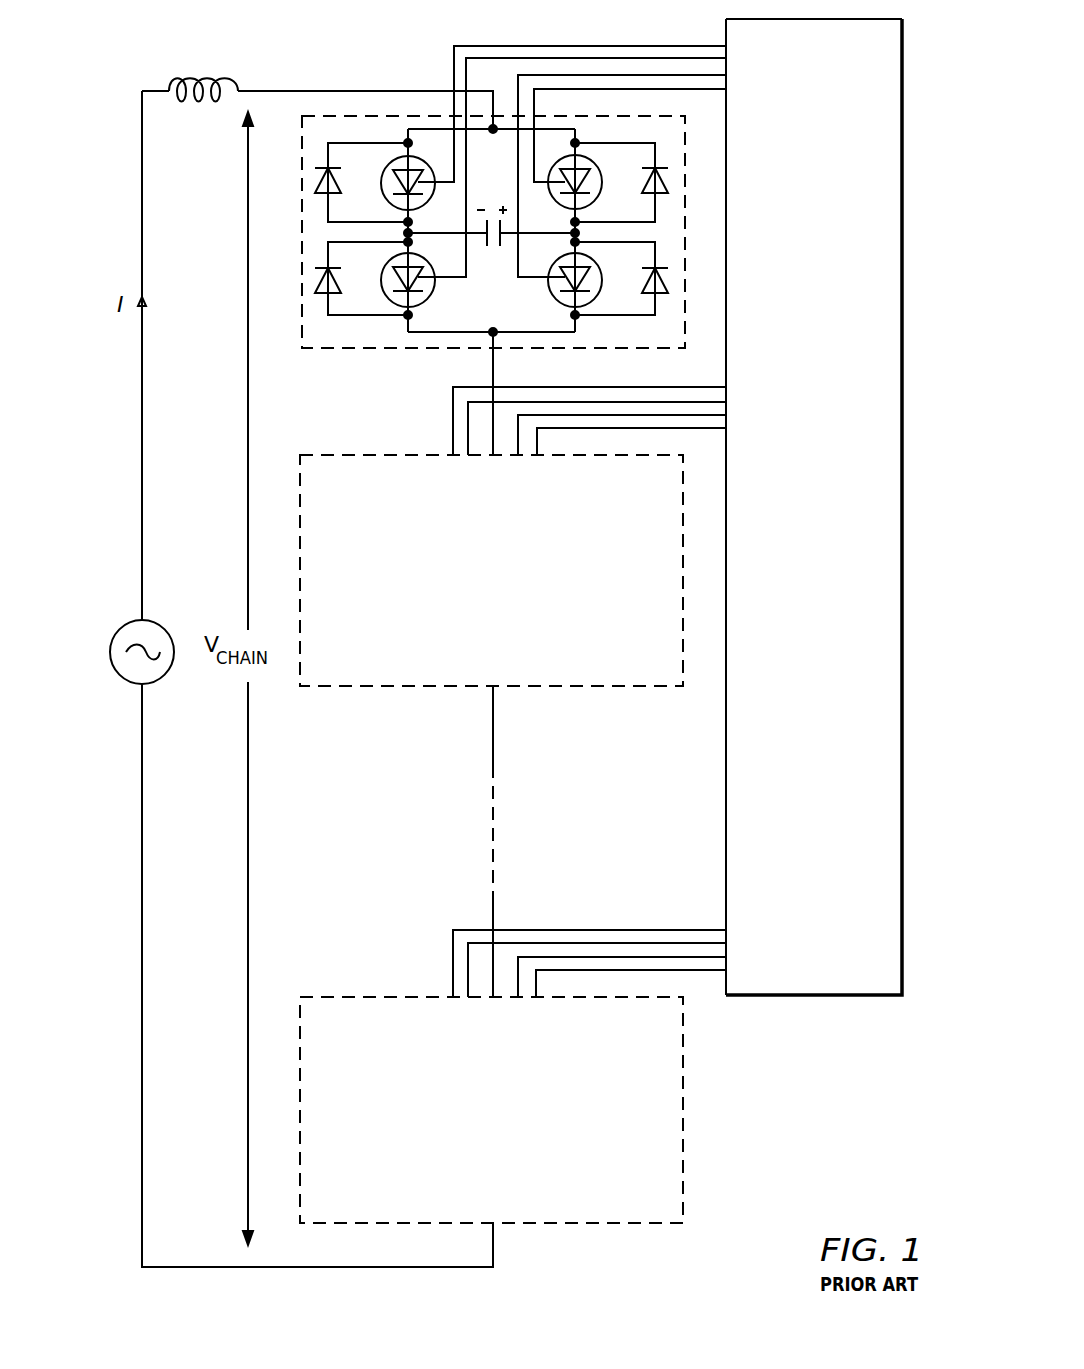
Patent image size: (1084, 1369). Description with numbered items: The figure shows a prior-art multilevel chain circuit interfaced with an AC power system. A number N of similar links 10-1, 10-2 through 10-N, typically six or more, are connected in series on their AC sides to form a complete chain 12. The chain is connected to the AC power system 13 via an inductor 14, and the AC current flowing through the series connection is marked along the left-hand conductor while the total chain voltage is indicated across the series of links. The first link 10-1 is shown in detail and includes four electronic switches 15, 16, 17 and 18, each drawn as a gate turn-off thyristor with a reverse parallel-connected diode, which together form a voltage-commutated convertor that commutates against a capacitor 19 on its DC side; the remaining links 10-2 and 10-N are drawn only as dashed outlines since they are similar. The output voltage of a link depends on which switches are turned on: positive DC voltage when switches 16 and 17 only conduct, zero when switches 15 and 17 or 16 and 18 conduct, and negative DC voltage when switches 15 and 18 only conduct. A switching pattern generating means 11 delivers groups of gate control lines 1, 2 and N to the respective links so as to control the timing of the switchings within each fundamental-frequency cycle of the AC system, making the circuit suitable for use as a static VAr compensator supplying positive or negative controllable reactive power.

The control lines to first cell 1 is at (735, 38).
The control lines to second cell 2 is at (735, 378).
The number of links N is at (735, 922).
The link 10-1 is at (493, 258).
The link 10-2 is at (402, 686).
The link 10-N is at (366, 972).
The switching pattern generating means 11 is at (726, 779).
The chain 12 is at (716, 1240).
The AC power system 13 is at (166, 628).
The inductor 14 is at (213, 78).
The electronic switch 15 is at (430, 202).
The electronic switch 16 is at (600, 197).
The electronic switch 17 is at (430, 298).
The electronic switch 18 is at (600, 296).
The capacitor 19 is at (495, 254).